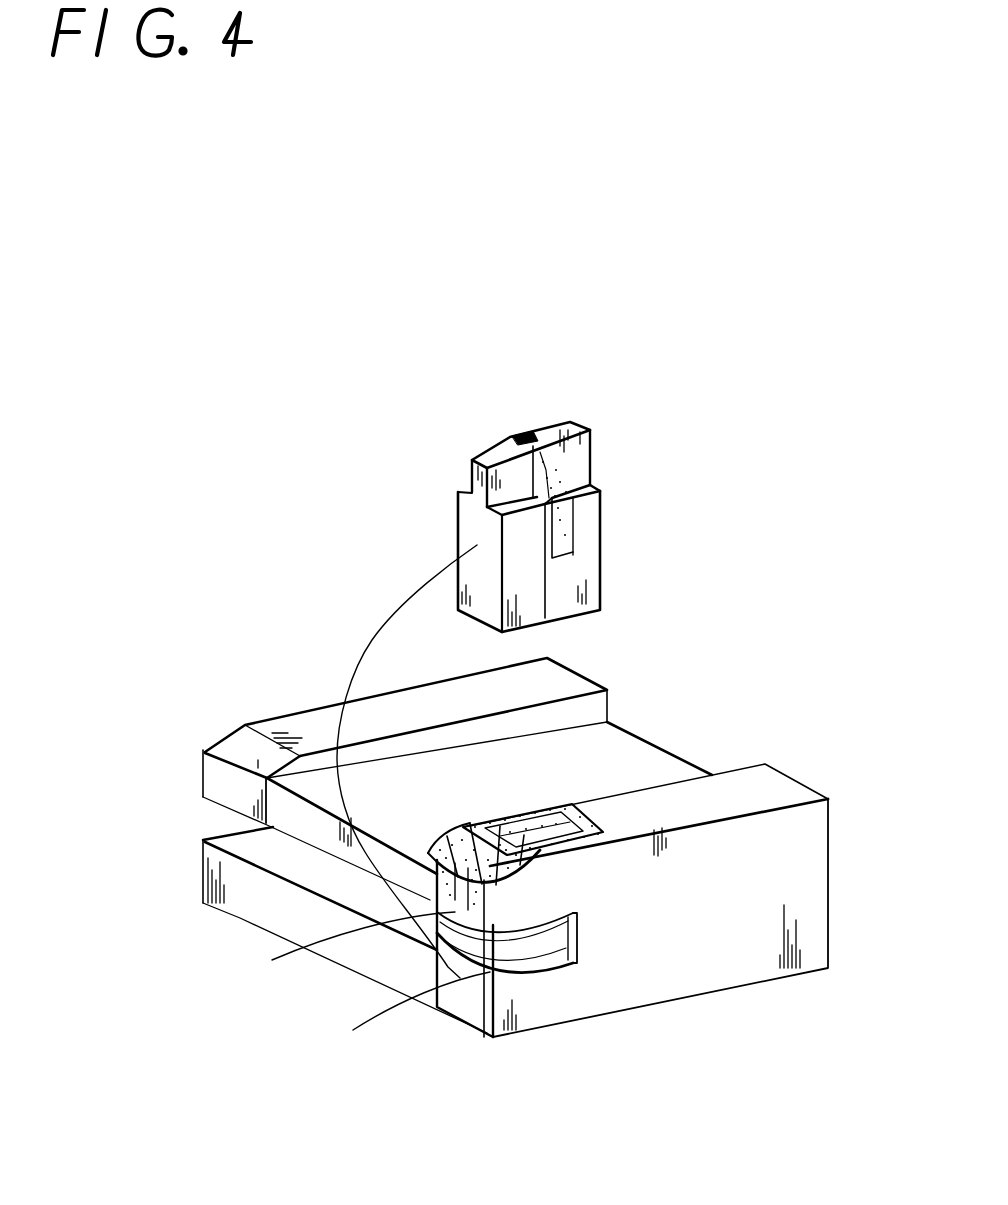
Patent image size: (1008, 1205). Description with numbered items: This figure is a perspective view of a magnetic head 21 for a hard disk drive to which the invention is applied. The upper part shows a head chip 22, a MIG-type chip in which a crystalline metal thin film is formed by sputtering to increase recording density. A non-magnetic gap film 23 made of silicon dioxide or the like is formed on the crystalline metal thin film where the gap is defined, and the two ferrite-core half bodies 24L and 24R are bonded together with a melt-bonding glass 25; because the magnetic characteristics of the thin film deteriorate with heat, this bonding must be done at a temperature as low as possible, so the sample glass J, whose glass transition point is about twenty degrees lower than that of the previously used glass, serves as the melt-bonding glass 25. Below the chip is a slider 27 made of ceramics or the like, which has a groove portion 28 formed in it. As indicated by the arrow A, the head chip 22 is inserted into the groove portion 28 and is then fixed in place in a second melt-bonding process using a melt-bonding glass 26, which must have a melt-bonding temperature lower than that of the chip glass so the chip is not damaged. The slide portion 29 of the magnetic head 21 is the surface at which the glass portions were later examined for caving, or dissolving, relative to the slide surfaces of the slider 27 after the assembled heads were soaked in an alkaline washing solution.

The magnetic head 21 is at (835, 579).
The head chip 22 is at (528, 424).
The non-magnetic gap film 23 is at (529, 427).
The ferrite-core half body 24L is at (530, 587).
The ferrite-core half body 24R is at (582, 590).
The melt-bonding glass 25 is at (548, 480).
The melt-bonding glass 26 is at (574, 822).
The slider 27 is at (702, 967).
The groove portion 28 is at (562, 848).
The slide portion 29 is at (450, 838).